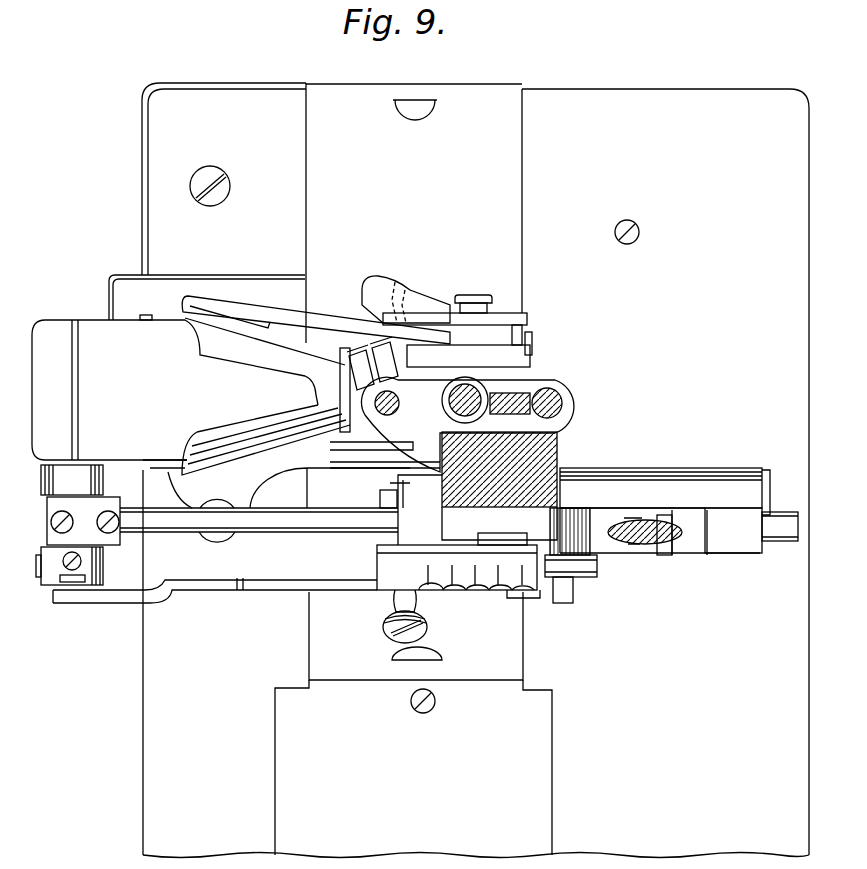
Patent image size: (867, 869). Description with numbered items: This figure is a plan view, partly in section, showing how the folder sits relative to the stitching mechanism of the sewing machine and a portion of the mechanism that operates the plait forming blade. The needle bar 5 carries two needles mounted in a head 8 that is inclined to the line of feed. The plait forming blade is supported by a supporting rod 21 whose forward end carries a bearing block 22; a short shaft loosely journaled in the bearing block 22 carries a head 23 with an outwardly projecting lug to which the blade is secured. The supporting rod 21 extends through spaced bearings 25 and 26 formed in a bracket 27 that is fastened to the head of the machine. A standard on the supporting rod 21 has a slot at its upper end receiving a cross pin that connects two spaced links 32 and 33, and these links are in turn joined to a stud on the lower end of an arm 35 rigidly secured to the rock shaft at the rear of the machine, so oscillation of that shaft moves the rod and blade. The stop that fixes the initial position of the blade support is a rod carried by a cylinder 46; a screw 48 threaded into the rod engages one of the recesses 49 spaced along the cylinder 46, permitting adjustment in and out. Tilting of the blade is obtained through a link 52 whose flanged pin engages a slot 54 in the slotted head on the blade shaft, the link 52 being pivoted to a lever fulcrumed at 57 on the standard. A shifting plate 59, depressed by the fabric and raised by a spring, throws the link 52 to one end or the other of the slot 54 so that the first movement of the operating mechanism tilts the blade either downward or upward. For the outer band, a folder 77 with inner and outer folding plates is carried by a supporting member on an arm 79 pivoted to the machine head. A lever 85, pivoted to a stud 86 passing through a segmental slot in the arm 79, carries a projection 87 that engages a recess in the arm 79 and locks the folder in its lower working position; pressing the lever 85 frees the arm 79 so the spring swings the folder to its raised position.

The needle bar 5 is at (396, 396).
The head 8 is at (362, 352).
The supporting rod 21 is at (291, 536).
The bearing block 22 is at (110, 502).
The head 23 is at (72, 480).
The bearing 25 is at (403, 506).
The bearing 26 is at (730, 556).
The bracket 27 is at (560, 460).
The link 32 is at (616, 512).
The link 33 is at (665, 552).
The arm 35 is at (648, 540).
The cylinder 46 is at (460, 572).
The screw 48 is at (404, 649).
The recesses 49 is at (418, 598).
The link 52 is at (212, 590).
The slot 54 is at (82, 586).
The fulcrum 57 is at (92, 560).
The shifting plate 59 is at (201, 292).
The folder 77 is at (191, 411).
The arm 79 is at (282, 322).
The lever 85 is at (392, 290).
The stud 86 is at (478, 296).
The projection 87 is at (530, 318).